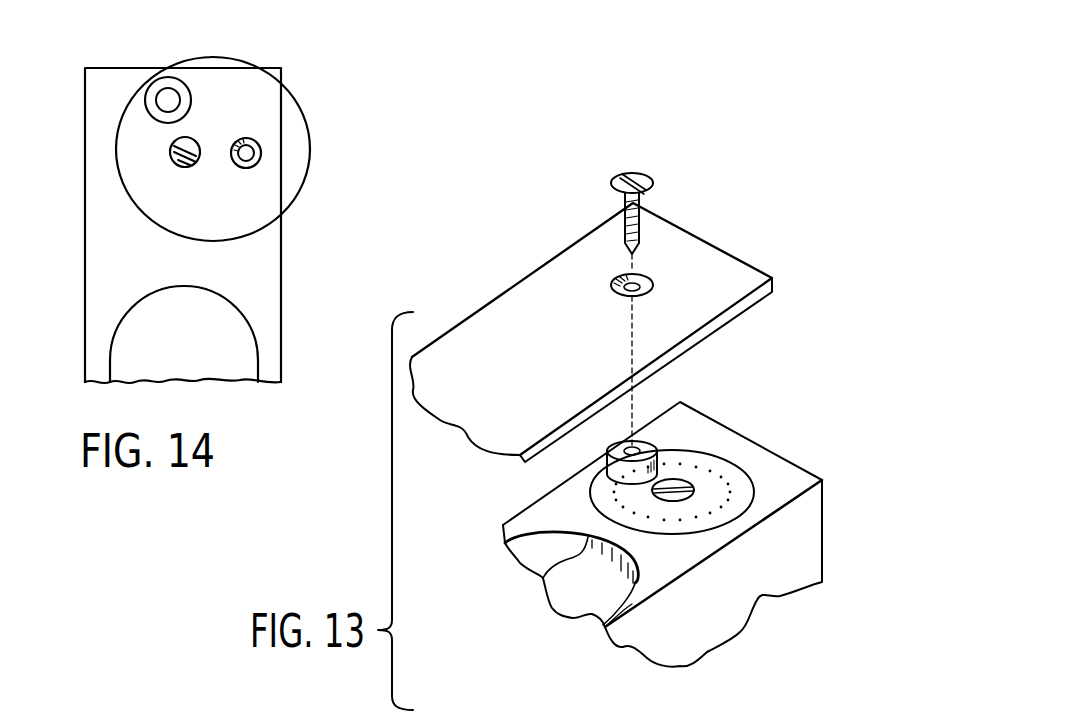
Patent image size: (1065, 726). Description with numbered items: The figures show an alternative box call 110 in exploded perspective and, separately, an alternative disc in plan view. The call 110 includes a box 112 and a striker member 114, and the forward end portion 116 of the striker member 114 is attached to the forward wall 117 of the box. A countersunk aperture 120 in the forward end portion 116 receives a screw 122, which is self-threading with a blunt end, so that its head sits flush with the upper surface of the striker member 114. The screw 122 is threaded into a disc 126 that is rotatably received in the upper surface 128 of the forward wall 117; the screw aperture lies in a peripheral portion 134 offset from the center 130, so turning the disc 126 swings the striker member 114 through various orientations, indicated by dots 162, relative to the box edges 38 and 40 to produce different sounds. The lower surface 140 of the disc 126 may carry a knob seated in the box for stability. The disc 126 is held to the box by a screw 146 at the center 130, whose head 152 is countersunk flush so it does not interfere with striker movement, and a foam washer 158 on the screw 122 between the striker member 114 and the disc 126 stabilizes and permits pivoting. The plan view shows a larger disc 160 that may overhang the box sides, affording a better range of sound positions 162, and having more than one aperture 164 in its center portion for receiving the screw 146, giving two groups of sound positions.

In FIG. 14, the upper edge 38 is at (263, 362).
In FIG. 13, the upper edge 38 is at (616, 609).
In FIG. 14, the upper edge 40 is at (97, 367).
In FIG. 13, the upper edge 40 is at (510, 532).
In FIG. 13, the box call 110 is at (741, 194).
In FIG. 14, the box 112 is at (257, 290).
In FIG. 13, the box 112 is at (757, 592).
In FIG. 13, the striker member 114 is at (698, 338).
In FIG. 13, the forward end portion 116 is at (538, 280).
In FIG. 13, the forward wall 117 is at (770, 460).
In FIG. 13, the aperture 120 is at (637, 280).
In FIG. 13, the screw 122 is at (642, 172).
In FIG. 13, the disc 126 is at (743, 505).
In FIG. 13, the upper surface 128 is at (692, 425).
In FIG. 13, the center 130 is at (673, 502).
In FIG. 13, the peripheral portion 134 is at (707, 467).
In FIG. 13, the lower surface 140 is at (703, 485).
In FIG. 14, the screw 146 is at (188, 138).
In FIG. 13, the head 152 is at (683, 502).
In FIG. 14, the foam washer 158 is at (156, 79).
In FIG. 13, the foam washer 158 is at (609, 450).
In FIG. 14, the disc 160 is at (288, 118).
In FIG. 13, the sound adjustment positions 162 is at (545, 582).
In FIG. 14, the aperture 164 is at (234, 157).